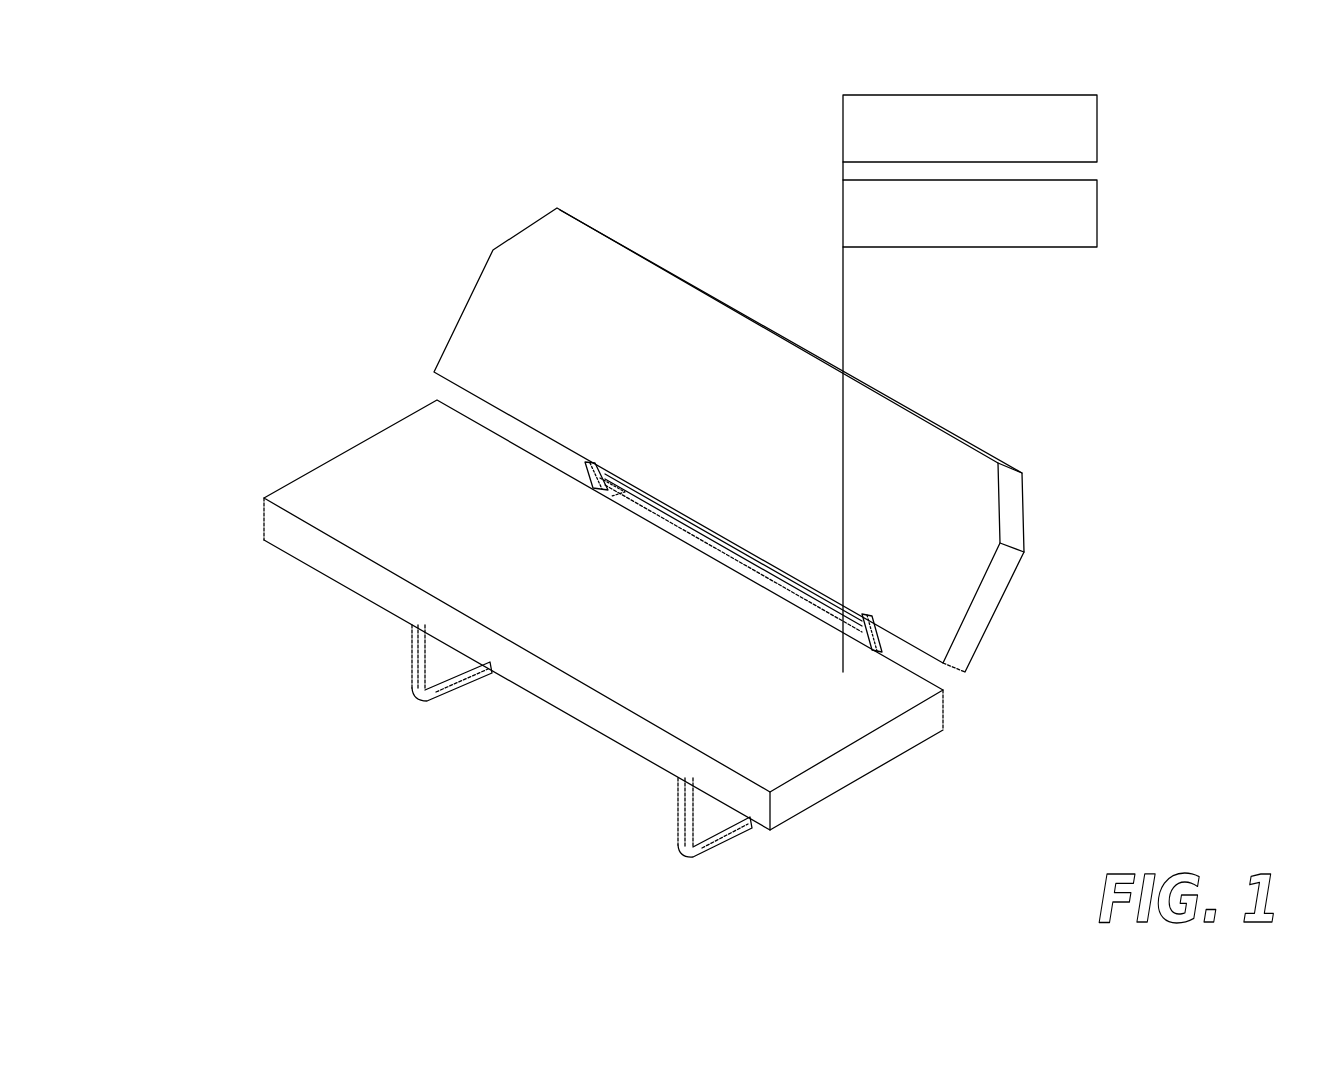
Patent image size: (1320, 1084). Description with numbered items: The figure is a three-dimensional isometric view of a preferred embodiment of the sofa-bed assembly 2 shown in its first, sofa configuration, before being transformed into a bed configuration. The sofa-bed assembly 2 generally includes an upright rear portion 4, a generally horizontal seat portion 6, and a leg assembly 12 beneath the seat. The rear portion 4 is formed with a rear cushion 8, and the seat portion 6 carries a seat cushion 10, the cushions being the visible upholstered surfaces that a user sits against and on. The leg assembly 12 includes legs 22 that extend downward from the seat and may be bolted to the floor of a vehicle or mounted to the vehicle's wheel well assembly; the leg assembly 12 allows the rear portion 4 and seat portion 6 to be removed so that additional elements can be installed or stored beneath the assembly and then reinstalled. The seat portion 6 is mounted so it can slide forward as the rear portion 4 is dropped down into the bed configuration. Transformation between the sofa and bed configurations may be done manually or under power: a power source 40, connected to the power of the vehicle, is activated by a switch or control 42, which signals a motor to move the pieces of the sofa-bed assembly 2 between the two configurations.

The sofa-bed assembly 2 is at (270, 223).
The rear portion 4 is at (483, 207).
The seat portion 6 is at (233, 448).
The rear cushion 8 is at (975, 619).
The seat cushion 10 is at (843, 763).
The leg assembly 12 is at (540, 733).
The legs 22 is at (413, 665).
The power source 40 is at (970, 129).
The switch or control 42 is at (970, 214).